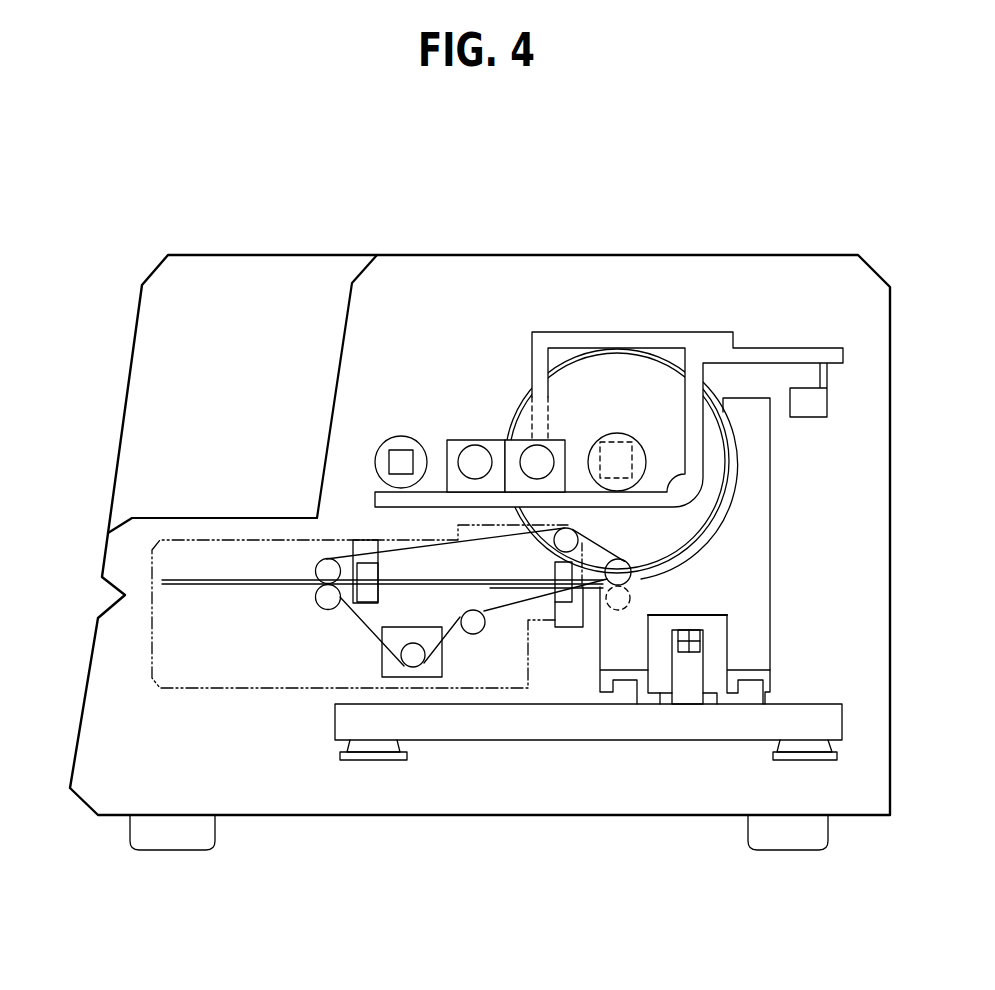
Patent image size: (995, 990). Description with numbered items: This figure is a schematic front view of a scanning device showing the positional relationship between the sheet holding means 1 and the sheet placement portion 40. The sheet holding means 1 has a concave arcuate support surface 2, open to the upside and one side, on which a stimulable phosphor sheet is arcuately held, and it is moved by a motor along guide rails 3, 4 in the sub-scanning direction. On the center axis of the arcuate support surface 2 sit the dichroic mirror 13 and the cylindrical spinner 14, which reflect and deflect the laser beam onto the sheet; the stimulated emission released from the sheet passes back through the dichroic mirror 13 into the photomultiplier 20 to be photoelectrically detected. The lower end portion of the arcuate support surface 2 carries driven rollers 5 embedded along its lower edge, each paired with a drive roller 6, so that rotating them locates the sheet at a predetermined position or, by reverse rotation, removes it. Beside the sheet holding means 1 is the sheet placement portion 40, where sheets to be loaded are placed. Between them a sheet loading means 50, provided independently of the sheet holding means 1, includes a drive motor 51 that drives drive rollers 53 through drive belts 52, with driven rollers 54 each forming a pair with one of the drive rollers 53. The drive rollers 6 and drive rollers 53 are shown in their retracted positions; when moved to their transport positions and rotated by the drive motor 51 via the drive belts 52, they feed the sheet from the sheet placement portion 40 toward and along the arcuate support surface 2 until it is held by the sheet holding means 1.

The sheet holding means 1 is at (753, 540).
The arcuate support surface 2 is at (735, 483).
The guide rail 3 is at (623, 695).
The guide rail 4 is at (752, 698).
The driven roller 5 is at (627, 592).
The drive roller 6 is at (632, 577).
The dichroic mirror 13 is at (618, 458).
The spinner 14 is at (578, 355).
The photomultiplier 20 is at (598, 374).
The sheet placement portion 40 is at (190, 577).
The sheet loading means 50 is at (350, 660).
The drive motor 51 is at (414, 668).
The drive belt 52 is at (358, 625).
The drive roller 53 is at (318, 568).
The driven roller 54 is at (325, 597).